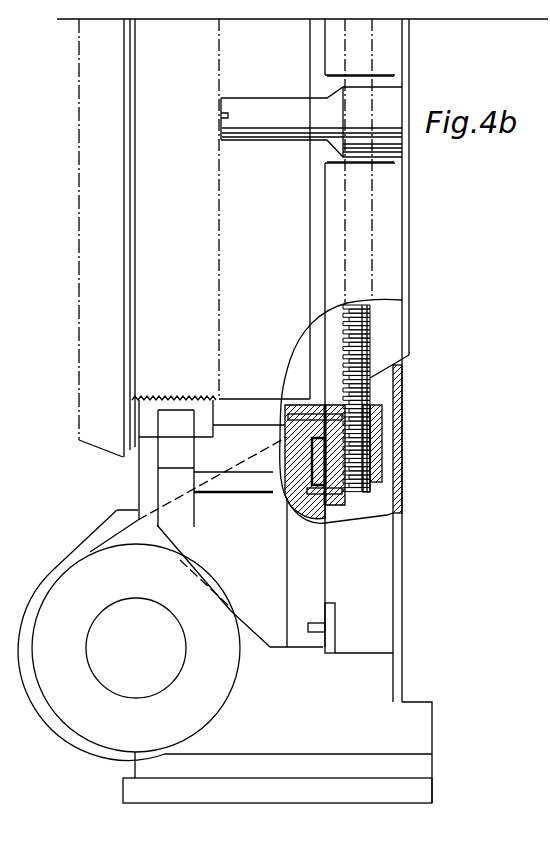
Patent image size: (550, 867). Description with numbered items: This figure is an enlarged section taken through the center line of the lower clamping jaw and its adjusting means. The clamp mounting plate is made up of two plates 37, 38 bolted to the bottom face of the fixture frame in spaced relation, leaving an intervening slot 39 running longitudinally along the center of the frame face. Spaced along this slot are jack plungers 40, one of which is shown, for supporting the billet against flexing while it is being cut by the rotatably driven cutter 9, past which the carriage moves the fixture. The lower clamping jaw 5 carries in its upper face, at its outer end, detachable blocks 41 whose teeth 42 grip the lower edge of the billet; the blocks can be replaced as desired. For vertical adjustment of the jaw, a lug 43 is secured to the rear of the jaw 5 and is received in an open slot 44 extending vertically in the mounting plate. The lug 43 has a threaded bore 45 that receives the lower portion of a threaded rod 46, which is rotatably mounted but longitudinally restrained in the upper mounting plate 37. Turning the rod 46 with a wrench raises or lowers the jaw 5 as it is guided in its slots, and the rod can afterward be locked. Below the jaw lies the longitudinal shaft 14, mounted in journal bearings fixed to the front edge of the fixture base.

The lower clamping jaw 5 is at (250, 541).
The cutter 9 is at (125, 250).
The longitudinal shaft 14 is at (174, 667).
The upper mounting plate 37 is at (392, 56).
The mounting plate 38 is at (378, 550).
The slot 39 is at (392, 81).
The jack plunger 40 is at (270, 108).
The block 41 is at (203, 410).
The teeth 42 is at (150, 412).
The lug 43 is at (382, 422).
The open slot 44 is at (327, 352).
The threaded bore 45 is at (383, 467).
The threaded rod 46 is at (370, 340).